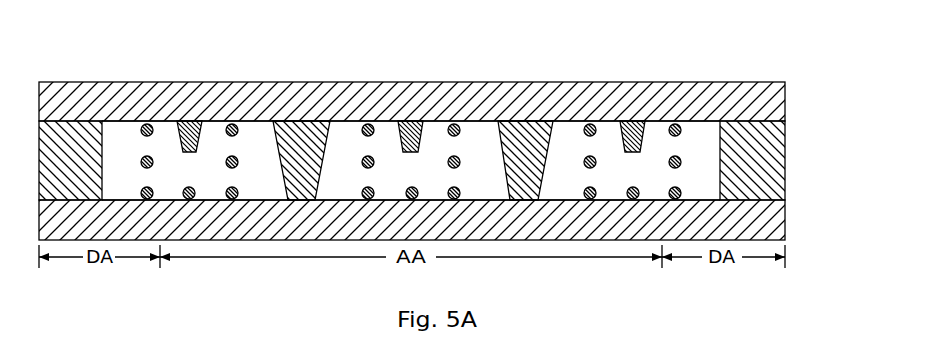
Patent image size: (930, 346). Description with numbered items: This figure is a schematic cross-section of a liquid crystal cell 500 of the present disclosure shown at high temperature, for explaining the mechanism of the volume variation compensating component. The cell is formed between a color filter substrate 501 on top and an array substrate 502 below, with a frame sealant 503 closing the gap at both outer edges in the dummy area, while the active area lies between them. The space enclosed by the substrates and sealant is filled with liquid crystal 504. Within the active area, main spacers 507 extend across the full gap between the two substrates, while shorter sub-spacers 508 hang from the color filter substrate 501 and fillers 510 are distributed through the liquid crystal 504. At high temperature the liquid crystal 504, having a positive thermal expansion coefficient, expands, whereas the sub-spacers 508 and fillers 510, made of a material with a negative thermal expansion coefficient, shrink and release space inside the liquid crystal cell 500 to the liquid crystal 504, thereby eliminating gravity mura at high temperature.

The liquid crystal cell 500 is at (83, 62).
The color filter substrate 501 is at (441, 94).
The array substrate 502 is at (441, 214).
The frame sealant 503 is at (441, 160).
The liquid crystal 504 is at (411, 119).
The main spacer 507 is at (430, 119).
The sub-spacer 508 is at (439, 95).
The filler 510 is at (450, 119).